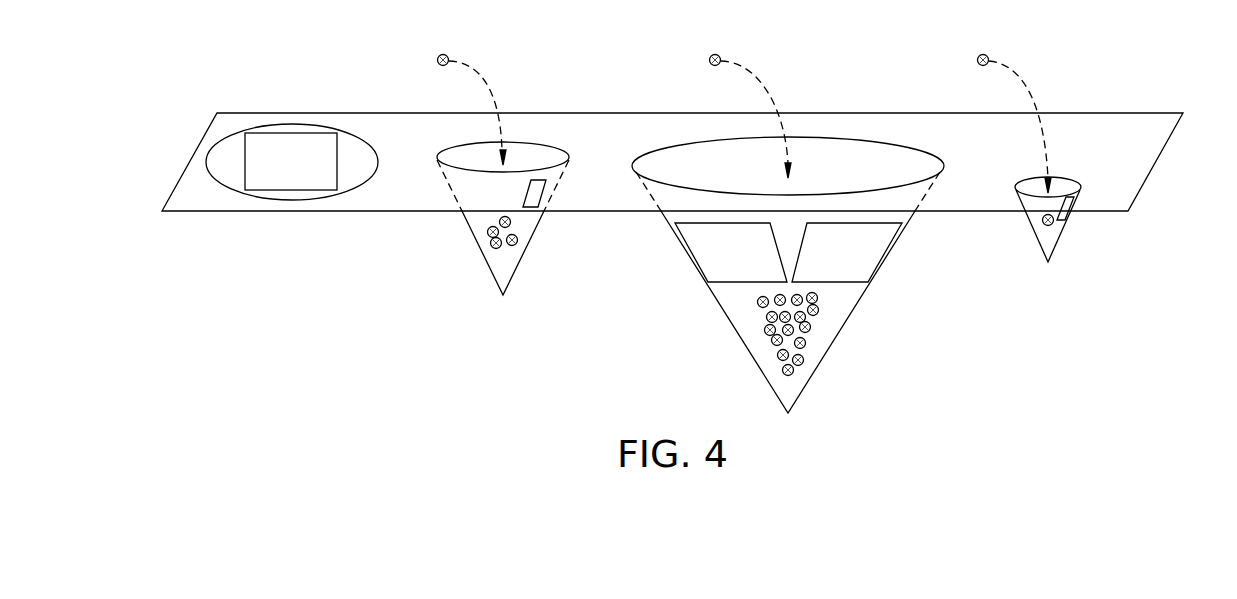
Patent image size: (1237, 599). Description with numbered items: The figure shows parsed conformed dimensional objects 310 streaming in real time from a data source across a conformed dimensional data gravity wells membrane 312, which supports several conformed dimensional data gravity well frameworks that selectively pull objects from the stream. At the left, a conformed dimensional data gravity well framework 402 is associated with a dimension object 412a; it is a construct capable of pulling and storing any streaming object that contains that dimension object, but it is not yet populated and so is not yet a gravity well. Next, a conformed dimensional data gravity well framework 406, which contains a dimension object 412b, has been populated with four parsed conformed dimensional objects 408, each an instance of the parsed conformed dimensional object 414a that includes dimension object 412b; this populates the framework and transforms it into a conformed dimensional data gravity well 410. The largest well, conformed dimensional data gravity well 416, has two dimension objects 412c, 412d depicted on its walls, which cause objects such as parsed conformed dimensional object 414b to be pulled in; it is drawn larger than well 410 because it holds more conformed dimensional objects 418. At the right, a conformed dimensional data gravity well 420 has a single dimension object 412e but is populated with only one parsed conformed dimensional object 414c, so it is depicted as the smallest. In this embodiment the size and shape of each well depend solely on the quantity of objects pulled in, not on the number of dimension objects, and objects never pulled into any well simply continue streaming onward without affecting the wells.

The parsed conformed dimensional objects 310 is at (426, 60).
The conformed dimensional data gravity wells membrane 312 is at (1146, 125).
The conformed dimensional data gravity well framework 402 is at (292, 200).
The conformed dimensional data gravity well framework 406 is at (446, 226).
The parsed conformed dimensional objects 408 is at (518, 241).
The conformed dimensional data gravity well 410 is at (510, 292).
The dimension object 412a is at (312, 126).
The dimension object 412b is at (546, 192).
The dimension object 412c is at (690, 258).
The dimension object 412d is at (887, 257).
The dimension object 412e is at (1070, 205).
The parsed conformed dimensional object 414a is at (447, 54).
The parsed conformed dimensional object 414b is at (717, 54).
The parsed conformed dimensional object 414c is at (987, 54).
The conformed dimensional data gravity well 416 is at (827, 363).
The conformed dimensional objects 418 is at (775, 356).
The conformed dimensional data gravity well 420 is at (1060, 238).